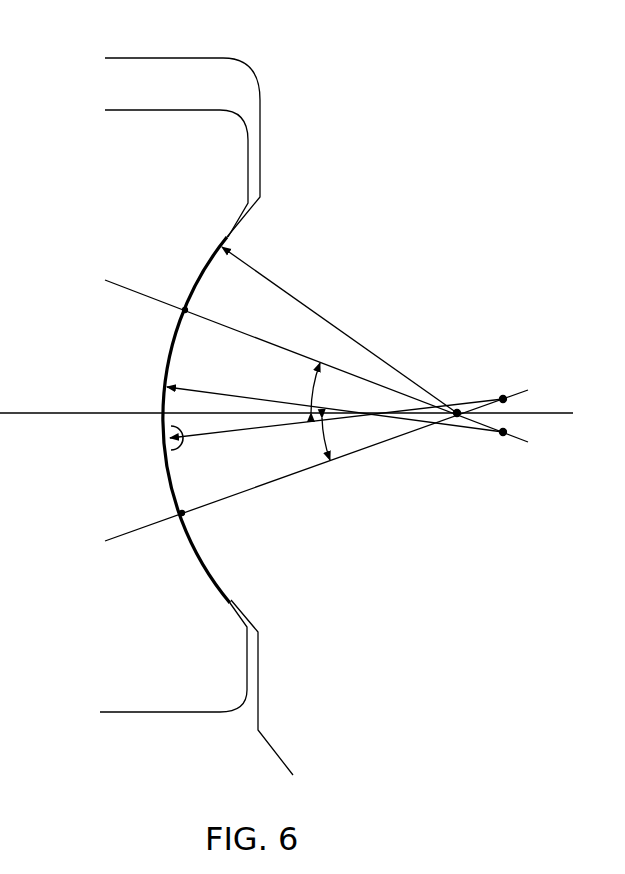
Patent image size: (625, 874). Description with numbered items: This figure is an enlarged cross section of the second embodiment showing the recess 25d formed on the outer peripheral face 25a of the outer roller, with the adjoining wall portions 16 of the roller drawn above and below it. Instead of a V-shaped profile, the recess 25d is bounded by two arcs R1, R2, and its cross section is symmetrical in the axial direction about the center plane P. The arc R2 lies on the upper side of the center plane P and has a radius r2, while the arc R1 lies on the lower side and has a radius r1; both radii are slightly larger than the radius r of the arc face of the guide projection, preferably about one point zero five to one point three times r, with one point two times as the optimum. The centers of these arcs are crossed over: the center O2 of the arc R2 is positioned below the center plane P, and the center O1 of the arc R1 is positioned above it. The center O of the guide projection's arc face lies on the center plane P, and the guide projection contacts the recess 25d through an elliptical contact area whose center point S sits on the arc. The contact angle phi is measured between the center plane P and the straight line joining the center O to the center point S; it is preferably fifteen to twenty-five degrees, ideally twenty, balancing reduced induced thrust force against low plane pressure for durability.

The lens holder / barrel 16 is at (133, 109).
The outer peripheral face 25a is at (247, 668).
The recess 25d is at (82, 432).
The arc R1 is at (168, 463).
The arc R2 is at (167, 424).
The center point of the contact ellipse S is at (185, 310).
The center plane P is at (65, 411).
The center of the arc face of the guide projection O is at (462, 409).
The center of the arc R1 O1 is at (505, 397).
The center of the arc R2 O2 is at (505, 436).
The radius of the arc face of the guide projection r is at (339, 330).
The radius of arc R1 r1 is at (336, 435).
The radius of arc R2 r2 is at (335, 399).
The contact angle phi is at (307, 412).